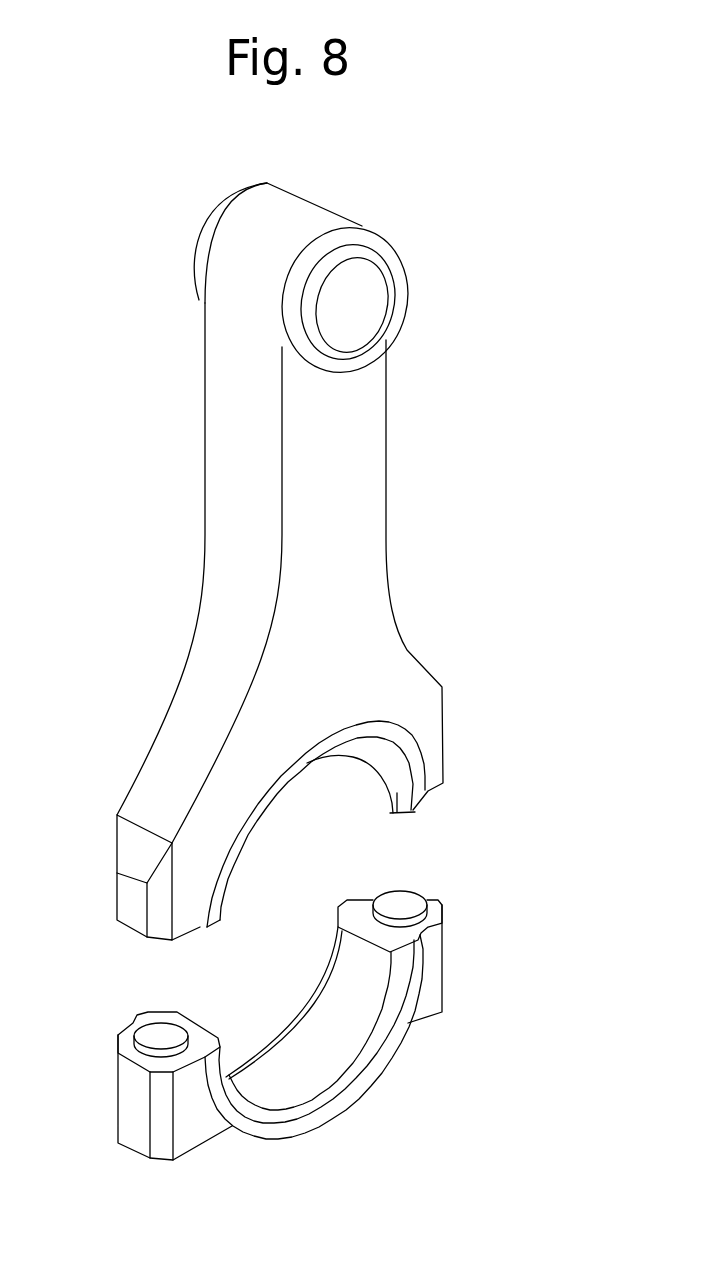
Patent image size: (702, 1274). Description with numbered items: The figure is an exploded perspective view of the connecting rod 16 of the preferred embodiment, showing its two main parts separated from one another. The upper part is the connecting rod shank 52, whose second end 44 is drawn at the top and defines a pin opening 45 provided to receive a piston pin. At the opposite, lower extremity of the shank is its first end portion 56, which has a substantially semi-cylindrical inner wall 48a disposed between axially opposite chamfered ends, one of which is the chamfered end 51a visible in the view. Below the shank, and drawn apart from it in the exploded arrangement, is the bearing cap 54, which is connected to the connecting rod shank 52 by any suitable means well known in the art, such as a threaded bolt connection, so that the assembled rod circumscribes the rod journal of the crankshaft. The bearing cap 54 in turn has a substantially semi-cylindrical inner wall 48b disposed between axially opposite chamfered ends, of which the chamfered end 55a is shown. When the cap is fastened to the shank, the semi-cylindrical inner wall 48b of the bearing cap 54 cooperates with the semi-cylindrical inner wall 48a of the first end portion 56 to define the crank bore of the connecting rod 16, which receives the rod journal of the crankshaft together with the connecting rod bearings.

The connecting rod 16 is at (468, 620).
The second end 44 is at (245, 293).
The pin opening 45 is at (357, 300).
The semi-cylindrical inner wall 48a is at (357, 778).
The semi-cylindrical inner wall 48b is at (347, 1045).
The chamfered end 51a is at (400, 813).
The connecting rod shank 52 is at (372, 508).
The bearing cap 54 is at (195, 1160).
The chamfered end 55a is at (305, 1108).
The first end portion 56 is at (157, 753).